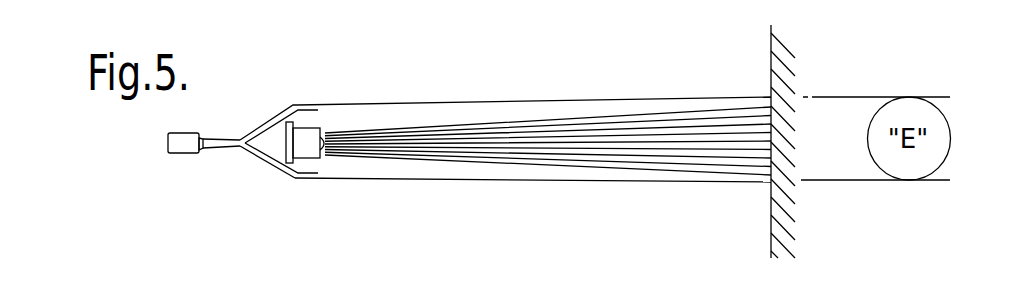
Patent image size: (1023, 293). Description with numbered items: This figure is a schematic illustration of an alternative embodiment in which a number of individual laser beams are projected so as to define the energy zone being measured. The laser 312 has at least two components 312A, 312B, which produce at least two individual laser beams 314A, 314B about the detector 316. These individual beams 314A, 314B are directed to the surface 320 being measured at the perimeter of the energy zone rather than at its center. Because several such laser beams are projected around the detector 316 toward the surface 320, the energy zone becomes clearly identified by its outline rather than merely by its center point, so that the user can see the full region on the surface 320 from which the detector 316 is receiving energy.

The laser 312 is at (187, 153).
The laser component 312A is at (268, 122).
The laser component 312B is at (278, 167).
The detector 316 is at (310, 158).
The individual laser beam 314A is at (447, 103).
The individual laser beam 314B is at (457, 178).
The surface 320 is at (770, 202).